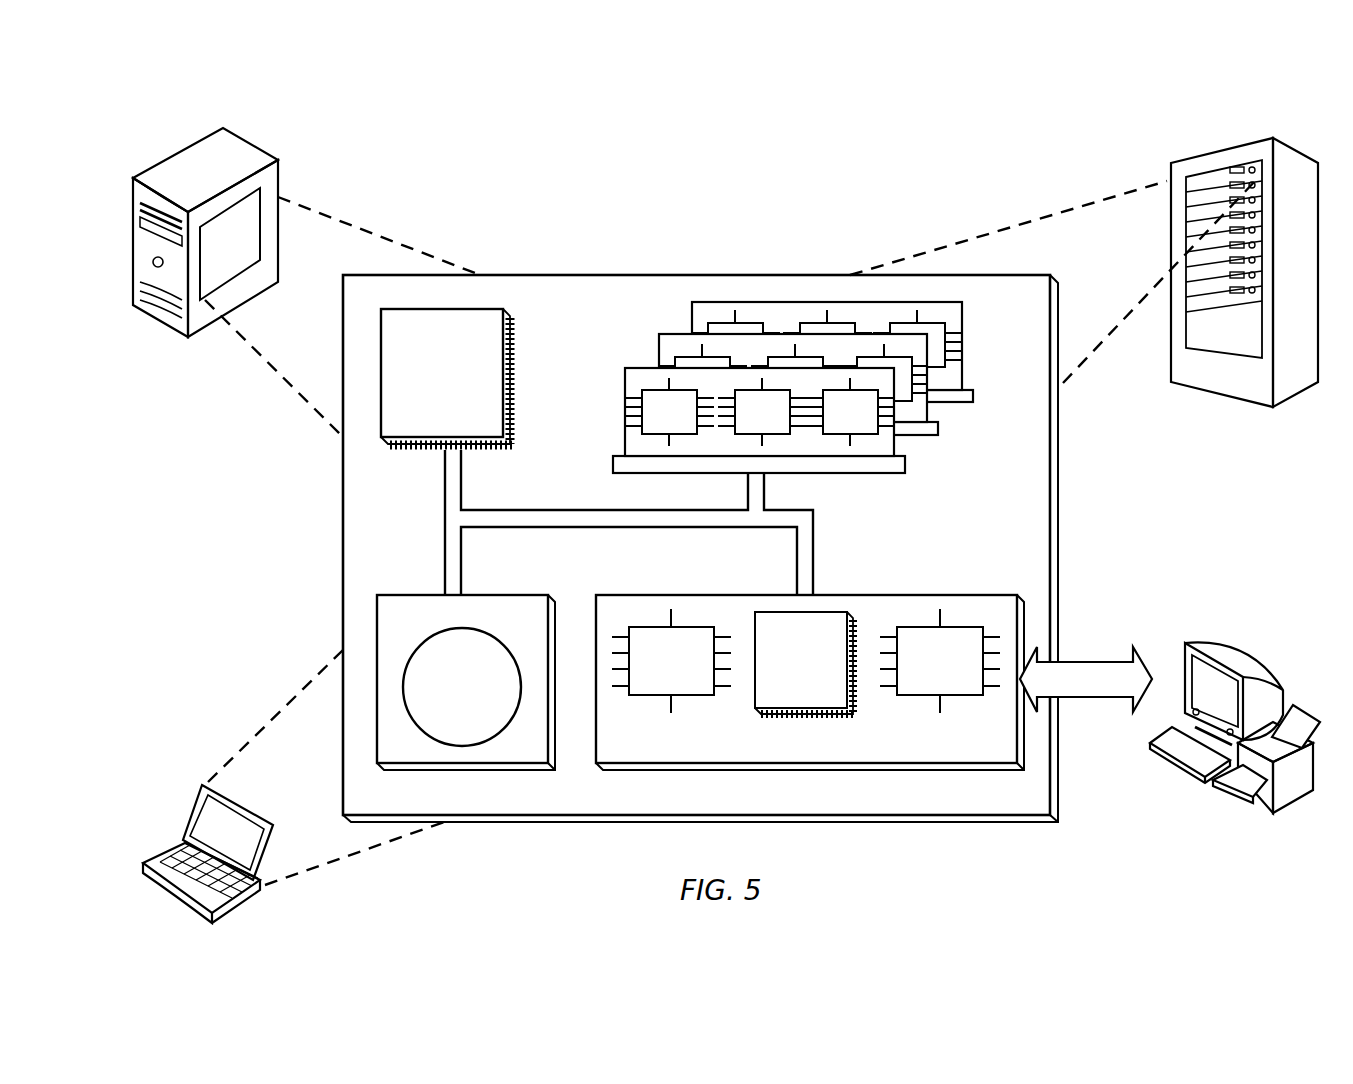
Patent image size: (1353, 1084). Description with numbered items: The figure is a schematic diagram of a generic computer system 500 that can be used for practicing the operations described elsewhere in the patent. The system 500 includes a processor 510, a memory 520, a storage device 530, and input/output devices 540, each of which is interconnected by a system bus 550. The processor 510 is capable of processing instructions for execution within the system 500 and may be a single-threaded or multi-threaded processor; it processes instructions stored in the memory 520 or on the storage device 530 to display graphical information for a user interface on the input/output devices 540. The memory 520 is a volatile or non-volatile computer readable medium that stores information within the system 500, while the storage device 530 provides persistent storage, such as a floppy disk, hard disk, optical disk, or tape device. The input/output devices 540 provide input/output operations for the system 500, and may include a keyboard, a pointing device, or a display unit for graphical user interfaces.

The computer system 500 is at (262, 91).
The processor 510 is at (446, 377).
The memory 520 is at (970, 438).
The storage device 530 is at (466, 682).
The input/output devices 540 is at (1183, 652).
The system bus 550 is at (628, 528).